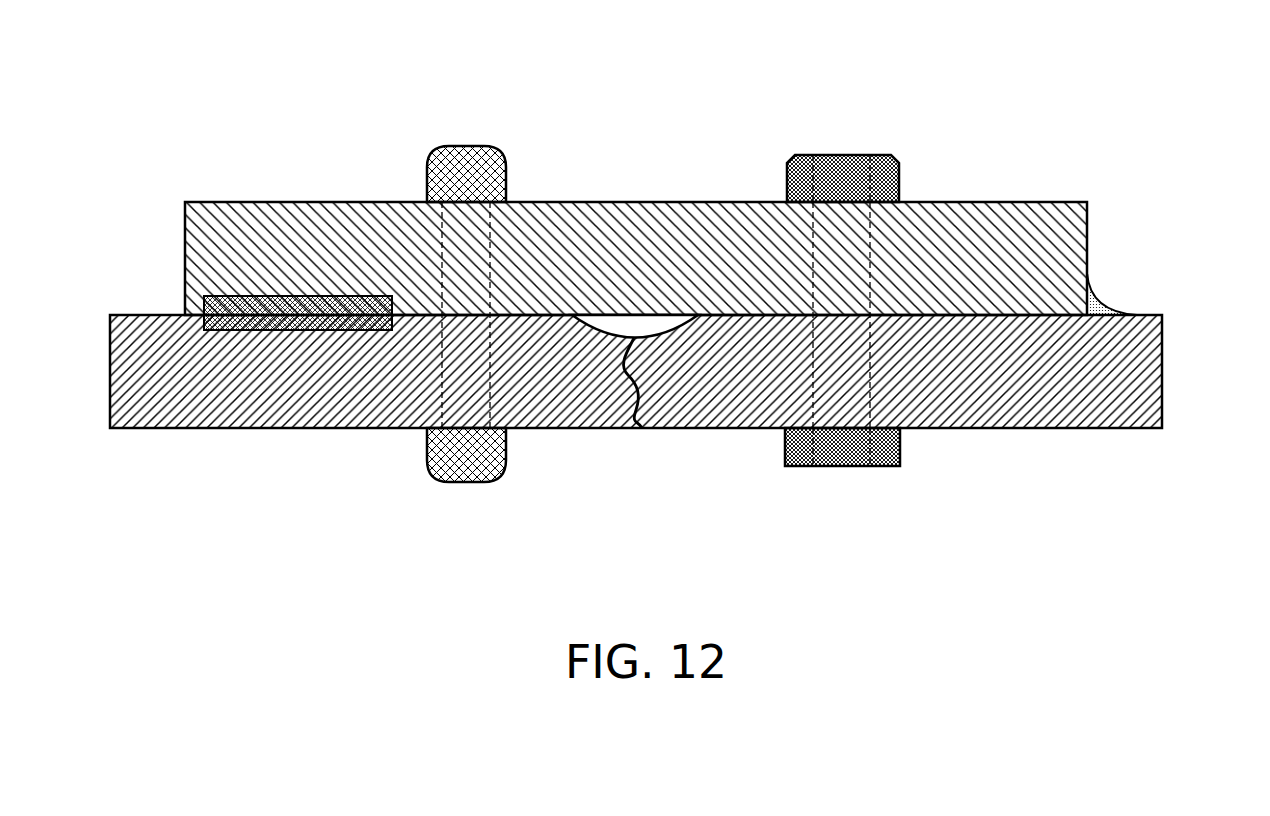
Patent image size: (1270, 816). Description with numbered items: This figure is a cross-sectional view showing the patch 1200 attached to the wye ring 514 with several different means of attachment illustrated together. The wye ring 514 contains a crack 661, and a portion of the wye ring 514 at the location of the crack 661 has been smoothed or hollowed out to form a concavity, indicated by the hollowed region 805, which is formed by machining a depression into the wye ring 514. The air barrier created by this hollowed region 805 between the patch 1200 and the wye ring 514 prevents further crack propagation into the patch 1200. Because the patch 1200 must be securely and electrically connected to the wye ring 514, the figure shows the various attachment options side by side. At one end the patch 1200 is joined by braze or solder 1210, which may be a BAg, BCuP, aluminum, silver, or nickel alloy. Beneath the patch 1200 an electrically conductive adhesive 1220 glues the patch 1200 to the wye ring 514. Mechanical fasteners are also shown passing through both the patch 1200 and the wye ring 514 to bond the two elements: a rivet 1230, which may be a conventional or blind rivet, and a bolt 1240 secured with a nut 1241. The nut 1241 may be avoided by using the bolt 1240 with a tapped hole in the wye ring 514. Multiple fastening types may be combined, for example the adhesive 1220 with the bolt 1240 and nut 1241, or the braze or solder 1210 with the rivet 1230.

The wye ring 514 is at (157, 408).
The crack 661 is at (626, 430).
The hollowed region (concavity) 805 is at (600, 318).
The patch 1200 is at (1028, 200).
The braze or solder 1210 is at (1093, 304).
The electrically conductive adhesive 1220 is at (234, 318).
The rivet 1230 is at (478, 146).
The bolt 1240 is at (842, 155).
The nut 1241 is at (898, 467).